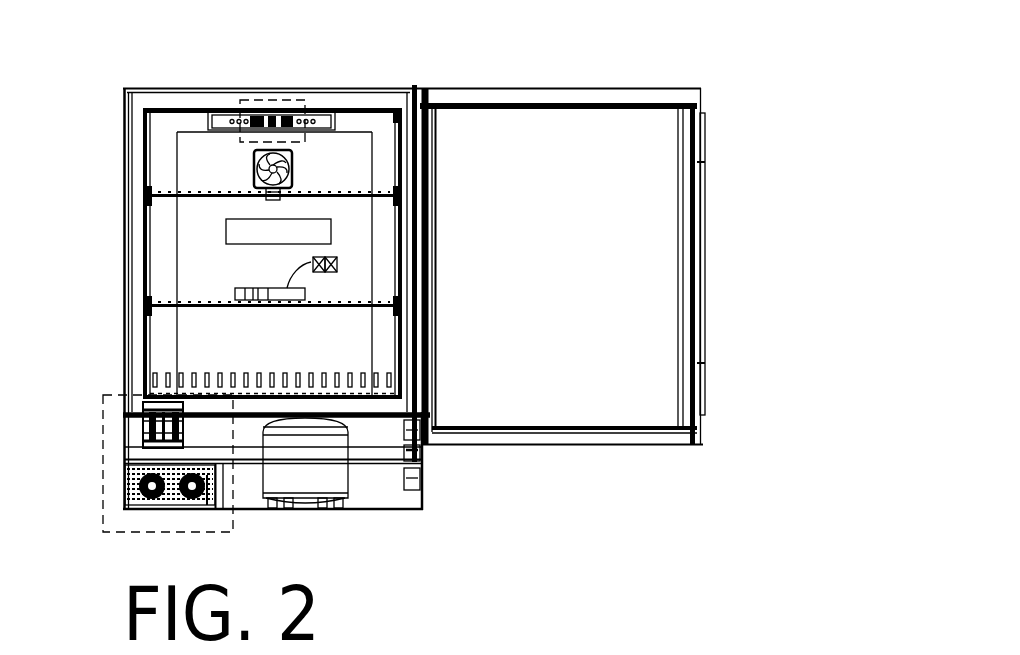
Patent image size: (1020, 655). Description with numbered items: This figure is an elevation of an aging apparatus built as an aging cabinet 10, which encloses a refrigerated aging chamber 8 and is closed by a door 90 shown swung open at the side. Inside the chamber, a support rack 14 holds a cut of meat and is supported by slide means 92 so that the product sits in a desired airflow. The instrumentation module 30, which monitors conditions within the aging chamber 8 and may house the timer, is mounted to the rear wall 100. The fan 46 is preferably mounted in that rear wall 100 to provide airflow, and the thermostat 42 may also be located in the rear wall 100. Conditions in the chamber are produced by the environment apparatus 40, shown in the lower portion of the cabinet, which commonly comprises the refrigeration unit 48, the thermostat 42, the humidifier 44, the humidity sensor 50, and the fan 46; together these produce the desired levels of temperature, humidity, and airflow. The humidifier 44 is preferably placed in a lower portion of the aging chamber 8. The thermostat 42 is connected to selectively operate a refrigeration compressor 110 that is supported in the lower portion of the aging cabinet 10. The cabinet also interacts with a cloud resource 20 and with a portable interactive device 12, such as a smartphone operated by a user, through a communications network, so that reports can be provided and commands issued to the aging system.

The aging cabinet 10 is at (327, 72).
The portable interactive device 12 is at (191, 50).
The aging chamber 8 is at (175, 176).
The humidity sensor 50 is at (255, 100).
The fan 46 is at (254, 160).
The cloud resource 20 is at (266, 197).
The thermostat 42 is at (158, 215).
The instrumentation module 30 is at (226, 232).
The slide means 92 is at (148, 305).
The support rack 14 is at (200, 310).
The rear wall 100 is at (235, 353).
The humidifier 44 is at (143, 440).
The refrigeration unit 48 is at (153, 503).
The environment apparatus 40 is at (118, 525).
The refrigeration compressor 110 is at (338, 480).
The door 90 is at (522, 163).